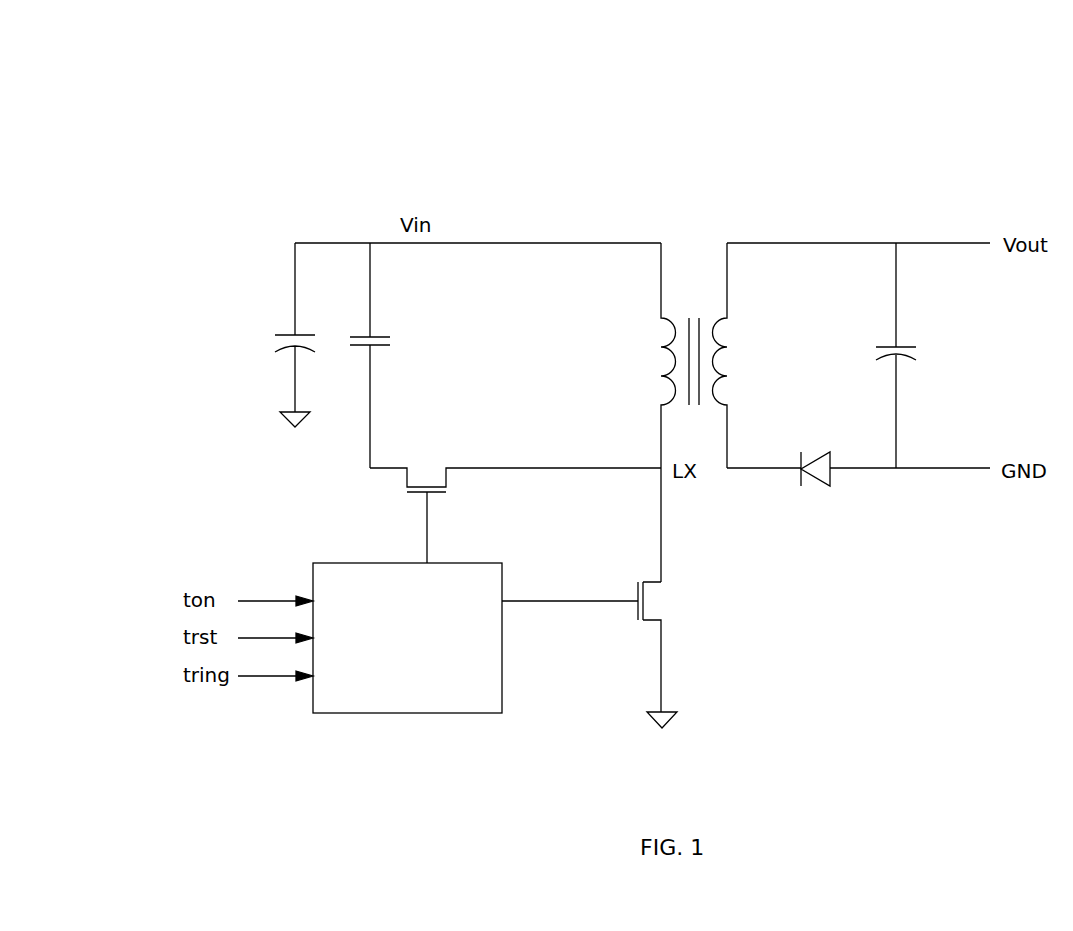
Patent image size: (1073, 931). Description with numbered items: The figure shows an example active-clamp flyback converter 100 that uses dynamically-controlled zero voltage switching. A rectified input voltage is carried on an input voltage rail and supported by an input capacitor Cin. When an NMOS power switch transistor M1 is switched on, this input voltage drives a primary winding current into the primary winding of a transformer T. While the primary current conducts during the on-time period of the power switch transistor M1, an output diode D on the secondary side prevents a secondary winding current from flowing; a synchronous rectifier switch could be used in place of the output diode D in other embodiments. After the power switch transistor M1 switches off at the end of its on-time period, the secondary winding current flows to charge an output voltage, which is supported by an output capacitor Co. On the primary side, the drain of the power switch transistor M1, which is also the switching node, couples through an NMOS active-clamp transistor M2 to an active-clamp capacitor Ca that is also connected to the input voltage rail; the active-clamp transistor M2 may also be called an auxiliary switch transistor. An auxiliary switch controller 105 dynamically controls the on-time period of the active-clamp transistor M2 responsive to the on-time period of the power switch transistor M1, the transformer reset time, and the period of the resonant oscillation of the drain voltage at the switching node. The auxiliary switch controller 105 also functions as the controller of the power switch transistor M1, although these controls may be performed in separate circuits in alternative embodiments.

The active-clamp flyback converter 100 is at (638, 78).
The auxiliary switch controller 105 is at (502, 665).
The input capacitor Cin is at (273, 335).
The active-clamp capacitor Ca is at (388, 355).
The active-clamp transistor M2 is at (515, 501).
The power switch transistor M1 is at (598, 655).
The transformer T is at (694, 406).
The output diode D is at (815, 453).
The output capacitor Co is at (916, 355).